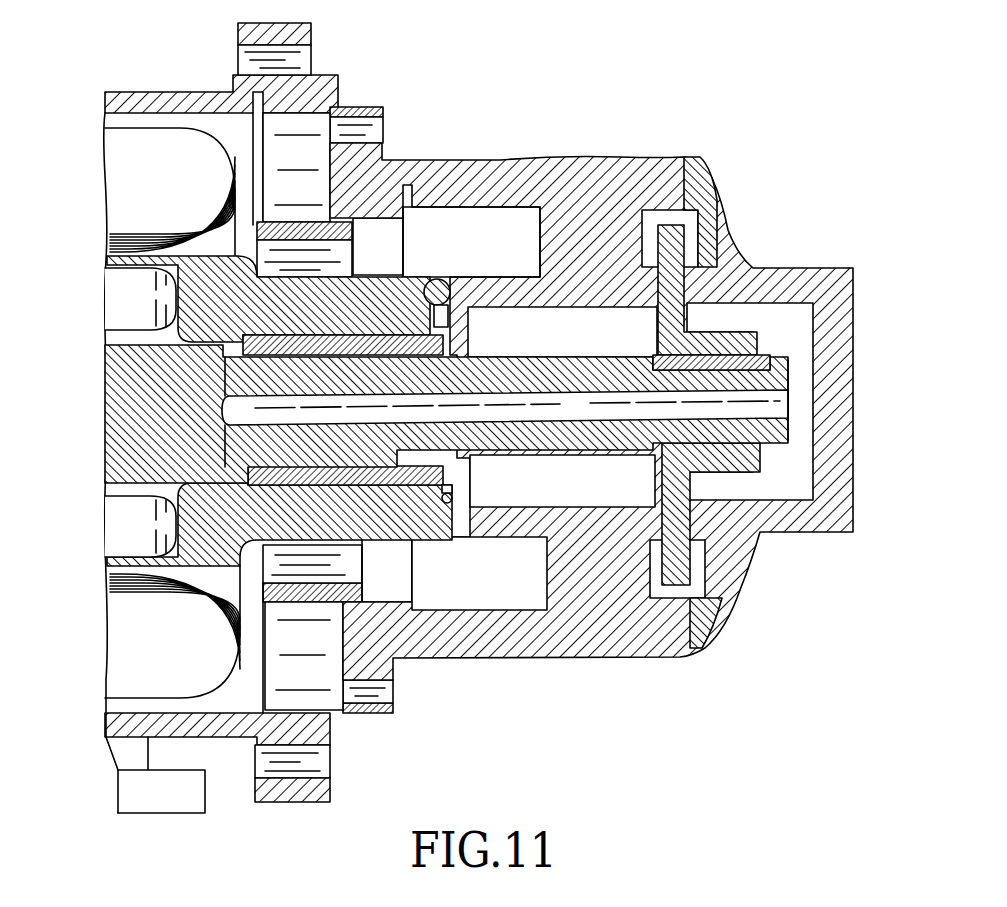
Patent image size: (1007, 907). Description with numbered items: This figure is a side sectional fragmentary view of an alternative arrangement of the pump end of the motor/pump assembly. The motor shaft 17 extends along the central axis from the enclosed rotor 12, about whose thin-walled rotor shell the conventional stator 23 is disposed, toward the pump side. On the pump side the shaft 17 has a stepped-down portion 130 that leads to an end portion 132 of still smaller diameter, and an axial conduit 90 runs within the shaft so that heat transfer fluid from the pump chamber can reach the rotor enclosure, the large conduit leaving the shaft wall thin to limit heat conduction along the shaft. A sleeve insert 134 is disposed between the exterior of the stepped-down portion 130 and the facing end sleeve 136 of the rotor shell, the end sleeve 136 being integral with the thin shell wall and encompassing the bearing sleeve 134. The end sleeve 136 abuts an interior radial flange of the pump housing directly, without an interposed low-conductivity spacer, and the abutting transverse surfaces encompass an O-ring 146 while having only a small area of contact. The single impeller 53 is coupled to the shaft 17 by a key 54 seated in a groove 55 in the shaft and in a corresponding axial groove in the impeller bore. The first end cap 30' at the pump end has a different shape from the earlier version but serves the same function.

The stator 23 is at (117, 148).
The first end cap 30' is at (309, 410).
The O-ring 146 is at (420, 297).
The impeller 53 is at (668, 288).
The key 54 is at (723, 363).
The groove 55 is at (763, 363).
The rotor 12 is at (117, 300).
The end sleeve 136 is at (210, 312).
The motor shaft 17 is at (130, 395).
The stepped-down portion 130 is at (288, 444).
The sleeve insert 134 is at (287, 483).
The axial conduit 90 is at (780, 407).
The end portion 132 is at (582, 450).